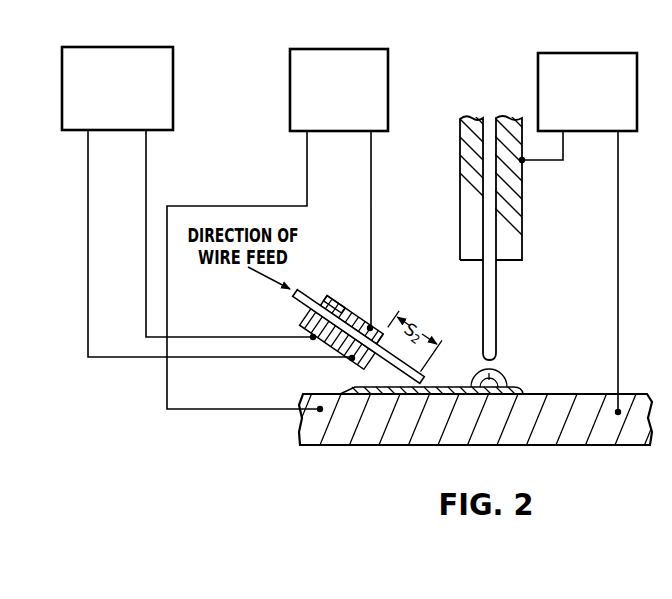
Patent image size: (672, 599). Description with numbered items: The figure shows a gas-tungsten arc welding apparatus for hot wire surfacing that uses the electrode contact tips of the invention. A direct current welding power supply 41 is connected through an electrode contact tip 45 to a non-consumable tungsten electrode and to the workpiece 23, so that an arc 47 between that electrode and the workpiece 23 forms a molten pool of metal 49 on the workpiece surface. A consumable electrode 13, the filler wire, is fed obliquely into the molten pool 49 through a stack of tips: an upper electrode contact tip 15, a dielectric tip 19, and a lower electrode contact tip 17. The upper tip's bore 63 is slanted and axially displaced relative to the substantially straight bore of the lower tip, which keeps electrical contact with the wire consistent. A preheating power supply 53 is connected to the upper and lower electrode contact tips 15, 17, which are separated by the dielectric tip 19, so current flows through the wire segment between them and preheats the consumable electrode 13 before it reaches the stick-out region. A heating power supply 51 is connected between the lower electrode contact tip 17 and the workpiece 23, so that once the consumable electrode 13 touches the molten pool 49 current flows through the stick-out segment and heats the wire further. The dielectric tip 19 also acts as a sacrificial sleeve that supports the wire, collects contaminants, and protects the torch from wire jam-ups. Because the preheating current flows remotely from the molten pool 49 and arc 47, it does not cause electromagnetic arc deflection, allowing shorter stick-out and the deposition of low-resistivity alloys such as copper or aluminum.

The consumable electrode 13 is at (297, 300).
The upper electrode contact tip 15 is at (343, 318).
The lower electrode contact tip 17 is at (378, 332).
The dielectric tip 19 is at (330, 365).
The workpiece 23 is at (637, 392).
The direct current welding power supply 41 is at (583, 53).
The electrode contact tip 45 is at (522, 195).
The arc 47 is at (498, 372).
The molten pool of metal 49 is at (528, 387).
The heating power supply 51 is at (352, 49).
The preheating power supply 53 is at (145, 47).
The upper tip's bore 63 is at (340, 313).